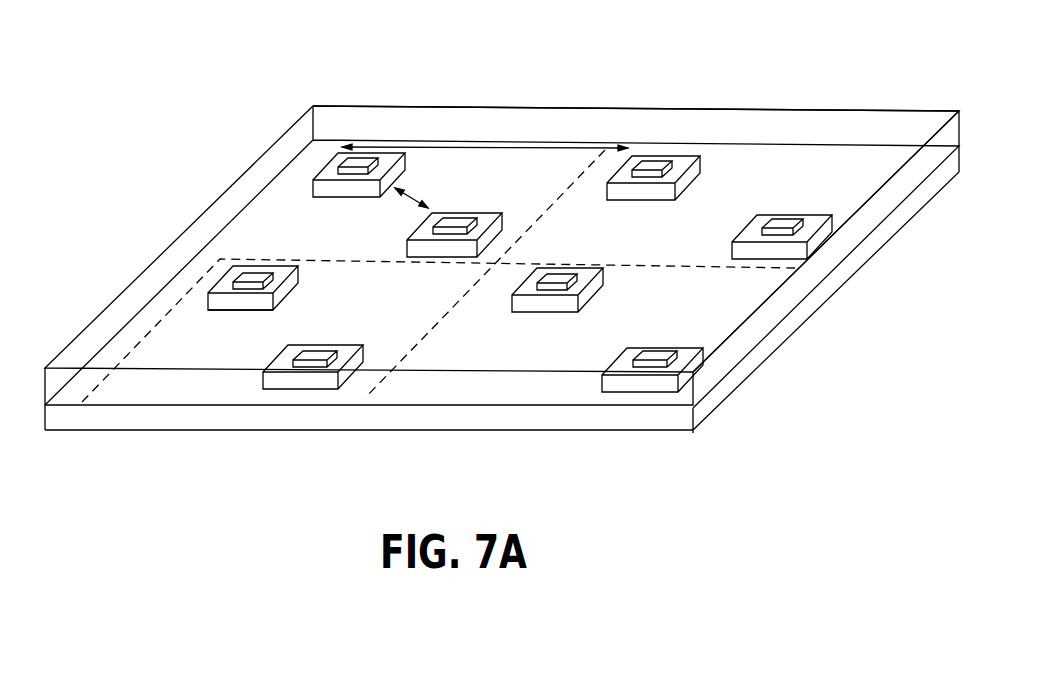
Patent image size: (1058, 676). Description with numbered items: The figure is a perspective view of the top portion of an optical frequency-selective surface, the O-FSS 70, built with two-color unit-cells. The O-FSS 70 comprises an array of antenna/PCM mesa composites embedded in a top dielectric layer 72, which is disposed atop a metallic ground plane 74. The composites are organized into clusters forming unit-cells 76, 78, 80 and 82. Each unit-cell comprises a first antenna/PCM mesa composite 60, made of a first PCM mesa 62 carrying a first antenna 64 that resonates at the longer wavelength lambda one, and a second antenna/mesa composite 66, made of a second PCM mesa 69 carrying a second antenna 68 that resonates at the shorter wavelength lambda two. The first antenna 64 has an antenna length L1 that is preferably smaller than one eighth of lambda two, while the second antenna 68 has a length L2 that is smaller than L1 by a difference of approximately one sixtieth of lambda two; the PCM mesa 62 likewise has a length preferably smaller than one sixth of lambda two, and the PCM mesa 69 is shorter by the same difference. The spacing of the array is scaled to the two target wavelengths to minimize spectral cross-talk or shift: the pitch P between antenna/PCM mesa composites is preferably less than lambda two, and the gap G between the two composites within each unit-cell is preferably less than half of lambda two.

The first antenna/PCM mesa composite 60 is at (302, 429).
The first PCM mesa 62 is at (268, 383).
The first antenna 64 is at (317, 350).
The second antenna/mesa composite 66 is at (222, 313).
The second antenna 68 is at (245, 272).
The second PCM mesa 69 is at (173, 317).
The O-FSS 70 is at (502, 277).
The top dielectric layer 72 is at (258, 163).
The metallic ground plane 74 is at (717, 397).
The unit-cell 76 is at (185, 392).
The unit-cell 78 is at (325, 152).
The unit-cell 80 is at (858, 163).
The unit-cell 82 is at (727, 313).
The gap G is at (416, 192).
The pitch P is at (483, 148).
The antenna length L1 is at (655, 357).
The antenna length L2 is at (557, 280).